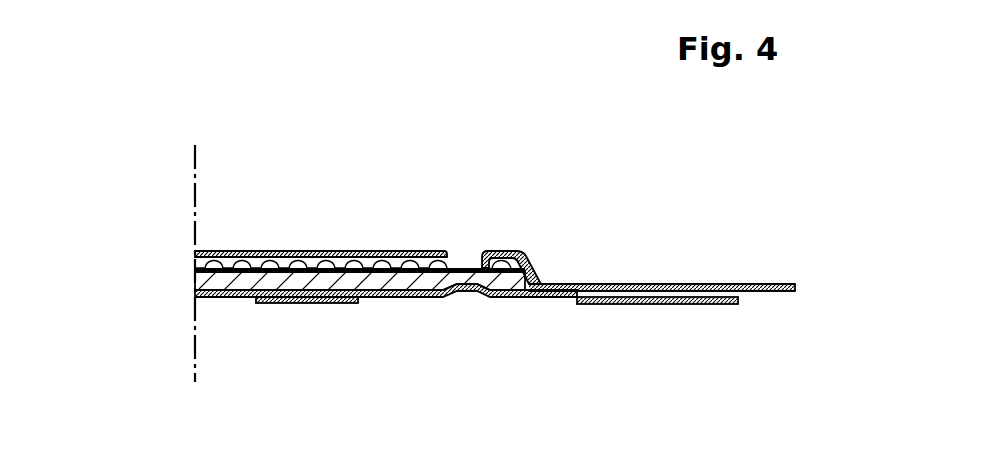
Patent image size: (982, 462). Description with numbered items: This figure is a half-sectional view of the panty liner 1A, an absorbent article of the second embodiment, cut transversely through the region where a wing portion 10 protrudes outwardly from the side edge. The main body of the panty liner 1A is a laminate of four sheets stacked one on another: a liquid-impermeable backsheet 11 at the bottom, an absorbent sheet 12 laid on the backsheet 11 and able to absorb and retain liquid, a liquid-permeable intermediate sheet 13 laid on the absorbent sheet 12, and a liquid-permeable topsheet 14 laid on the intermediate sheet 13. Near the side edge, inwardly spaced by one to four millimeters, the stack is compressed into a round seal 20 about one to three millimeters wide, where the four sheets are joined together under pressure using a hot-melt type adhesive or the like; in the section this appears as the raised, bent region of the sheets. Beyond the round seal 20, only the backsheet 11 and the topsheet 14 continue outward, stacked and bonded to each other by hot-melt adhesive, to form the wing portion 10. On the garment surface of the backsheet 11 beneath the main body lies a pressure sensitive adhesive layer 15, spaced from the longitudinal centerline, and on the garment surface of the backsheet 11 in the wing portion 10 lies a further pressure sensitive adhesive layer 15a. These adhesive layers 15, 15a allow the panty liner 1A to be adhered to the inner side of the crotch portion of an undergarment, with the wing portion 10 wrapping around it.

The panty liner 1A is at (441, 196).
The wing portion 10 is at (712, 266).
The backsheet 11 is at (402, 298).
The absorbent sheet 12 is at (196, 275).
The intermediate sheet 13 is at (196, 265).
The topsheet 14 is at (268, 251).
The pressure sensitive adhesive layer 15 is at (320, 303).
The pressure sensitive adhesive layer 15a is at (622, 304).
The round seal 20 is at (468, 265).